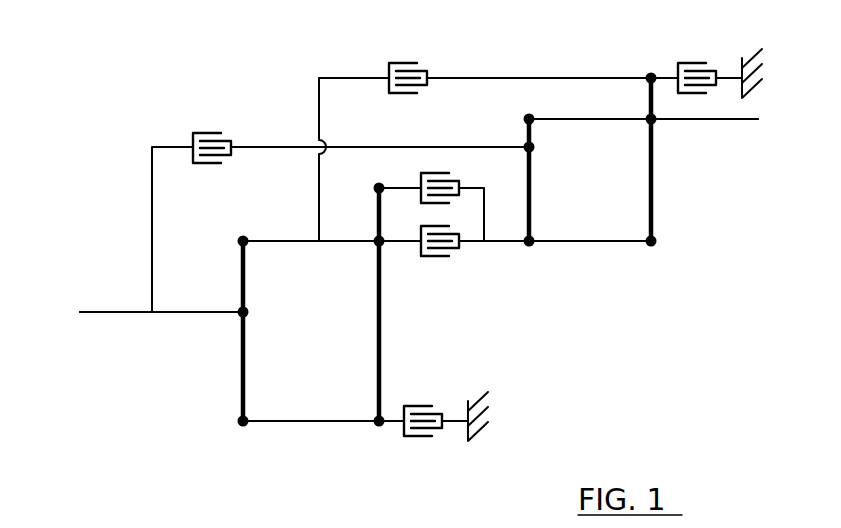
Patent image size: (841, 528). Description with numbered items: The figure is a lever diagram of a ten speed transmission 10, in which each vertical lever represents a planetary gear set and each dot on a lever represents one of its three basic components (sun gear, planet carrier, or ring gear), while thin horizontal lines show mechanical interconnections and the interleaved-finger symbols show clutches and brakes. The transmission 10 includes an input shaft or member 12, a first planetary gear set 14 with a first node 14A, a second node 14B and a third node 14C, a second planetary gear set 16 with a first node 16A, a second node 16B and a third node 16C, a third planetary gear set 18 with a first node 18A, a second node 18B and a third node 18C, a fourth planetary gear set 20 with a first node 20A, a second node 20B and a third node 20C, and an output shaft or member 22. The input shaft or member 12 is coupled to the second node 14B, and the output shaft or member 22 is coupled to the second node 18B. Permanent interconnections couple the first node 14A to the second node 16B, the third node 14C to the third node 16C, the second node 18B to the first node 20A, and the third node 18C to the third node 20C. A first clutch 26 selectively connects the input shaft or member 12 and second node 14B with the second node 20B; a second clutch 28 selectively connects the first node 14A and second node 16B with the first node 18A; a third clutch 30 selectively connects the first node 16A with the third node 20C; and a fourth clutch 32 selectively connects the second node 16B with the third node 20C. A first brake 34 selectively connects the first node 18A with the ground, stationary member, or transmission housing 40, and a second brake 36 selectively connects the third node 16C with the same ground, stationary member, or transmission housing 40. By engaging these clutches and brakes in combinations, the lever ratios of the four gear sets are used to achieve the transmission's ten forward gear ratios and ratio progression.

The ten speed transmission 10 is at (568, 35).
The input shaft or member 12 is at (94, 310).
The first planetary gear set 14 is at (207, 364).
The first node of the first planetary gear set 14A is at (240, 236).
The second node of the first planetary gear set 14B is at (250, 309).
The third node of the first planetary gear set 14C is at (236, 420).
The second planetary gear set 16 is at (344, 337).
The first node of the second planetary gear set 16A is at (374, 184).
The second node of the second planetary gear set 16B is at (372, 246).
The third node of the second planetary gear set 16C is at (380, 430).
The third planetary gear set 18 is at (620, 199).
The first node of the third planetary gear set 18A is at (650, 72).
The second node of the third planetary gear set 18B is at (648, 114).
The third node of the third planetary gear set 18C is at (653, 250).
The fourth planetary gear set 20 is at (500, 219).
The first node of the fourth planetary gear set 20A is at (524, 113).
The second node of the fourth planetary gear set 20B is at (536, 150).
The third node of the fourth planetary gear set 20C is at (531, 248).
The output shaft or member 22 is at (710, 124).
The first clutch 26 is at (212, 131).
The second clutch 28 is at (393, 61).
The third clutch 30 is at (436, 173).
The fourth clutch 32 is at (432, 259).
The first brake 34 is at (693, 61).
The second brake 36 is at (417, 404).
The ground, stationary member, or transmission housing 40 is at (742, 62).